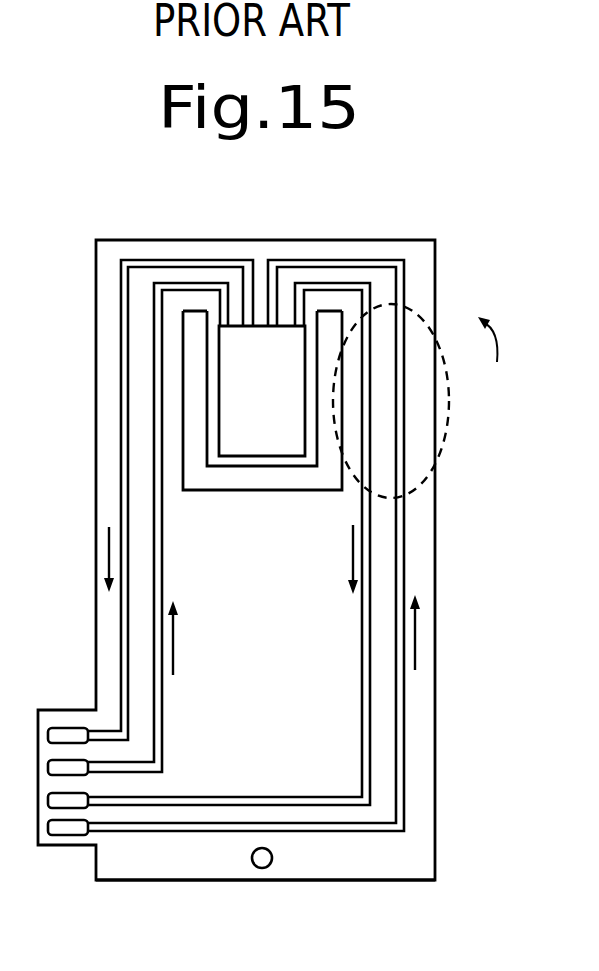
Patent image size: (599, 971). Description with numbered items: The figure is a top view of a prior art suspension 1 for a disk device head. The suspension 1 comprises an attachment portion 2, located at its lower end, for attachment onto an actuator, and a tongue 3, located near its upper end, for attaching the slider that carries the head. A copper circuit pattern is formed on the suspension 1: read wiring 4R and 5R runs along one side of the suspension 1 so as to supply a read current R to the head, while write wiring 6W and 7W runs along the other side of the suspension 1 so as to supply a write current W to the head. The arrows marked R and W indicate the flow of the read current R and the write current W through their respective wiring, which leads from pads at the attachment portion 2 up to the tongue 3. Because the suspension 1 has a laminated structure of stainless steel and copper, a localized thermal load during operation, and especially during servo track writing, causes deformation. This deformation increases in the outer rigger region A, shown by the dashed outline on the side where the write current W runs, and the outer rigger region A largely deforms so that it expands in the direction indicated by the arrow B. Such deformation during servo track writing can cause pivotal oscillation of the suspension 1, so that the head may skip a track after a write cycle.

The suspension 1 is at (441, 244).
The attachment portion 2 is at (417, 850).
The tongue 3 is at (268, 372).
The read wiring 4R is at (153, 398).
The read wiring 5R is at (121, 493).
The write wiring 6W is at (405, 558).
The write wiring 7W is at (370, 697).
The outer rigger region A is at (439, 463).
The arrow B is at (498, 339).
The read current R is at (138, 601).
The write current W is at (397, 597).